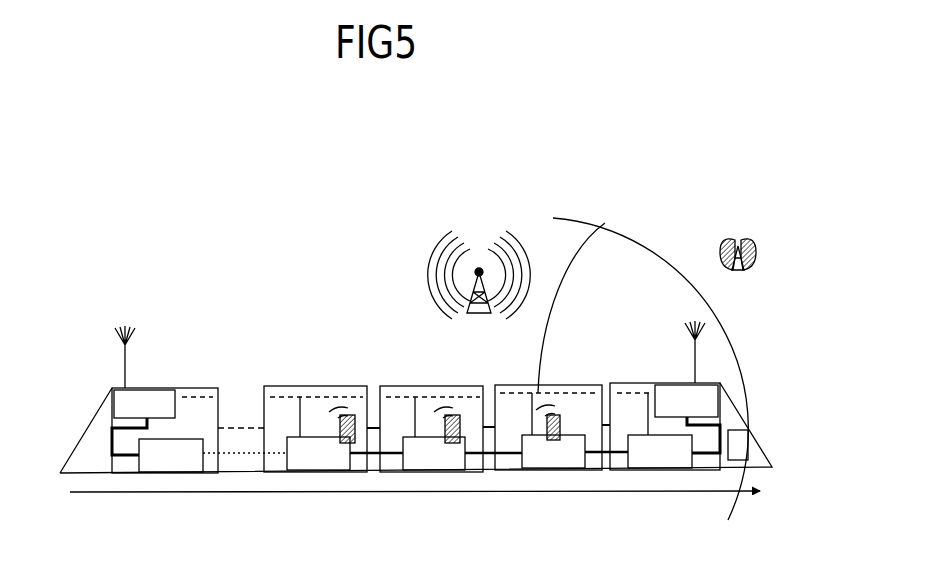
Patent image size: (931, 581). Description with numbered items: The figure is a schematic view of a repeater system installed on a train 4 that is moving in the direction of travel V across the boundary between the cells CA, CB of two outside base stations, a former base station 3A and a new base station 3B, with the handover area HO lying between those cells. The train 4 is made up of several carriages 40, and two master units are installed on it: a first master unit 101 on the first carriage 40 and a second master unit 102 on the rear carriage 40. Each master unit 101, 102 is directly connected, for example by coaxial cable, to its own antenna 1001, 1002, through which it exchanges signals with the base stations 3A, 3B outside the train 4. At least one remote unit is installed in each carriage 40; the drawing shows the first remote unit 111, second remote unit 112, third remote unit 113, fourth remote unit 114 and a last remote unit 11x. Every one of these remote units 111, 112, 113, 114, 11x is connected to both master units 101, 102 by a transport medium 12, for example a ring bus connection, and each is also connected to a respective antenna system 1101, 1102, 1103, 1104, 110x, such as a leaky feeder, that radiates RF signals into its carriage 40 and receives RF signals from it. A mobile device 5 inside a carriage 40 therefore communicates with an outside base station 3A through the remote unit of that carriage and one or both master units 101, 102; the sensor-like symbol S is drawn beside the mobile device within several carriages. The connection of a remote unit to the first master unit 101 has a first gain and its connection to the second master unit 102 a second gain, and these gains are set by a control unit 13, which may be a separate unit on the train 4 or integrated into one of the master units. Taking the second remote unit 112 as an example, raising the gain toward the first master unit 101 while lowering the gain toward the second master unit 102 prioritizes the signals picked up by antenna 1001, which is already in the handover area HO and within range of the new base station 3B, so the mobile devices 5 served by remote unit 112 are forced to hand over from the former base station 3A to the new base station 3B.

The train 4 is at (71, 479).
The mobile device 5 is at (352, 408).
The transport medium 12 is at (127, 464).
The control unit 13 is at (740, 445).
The carriage 40 is at (203, 388).
The antenna system 110x is at (184, 437).
The antenna system 1104 is at (325, 397).
The antenna system 1103 is at (400, 397).
The antenna system 1102 is at (517, 393).
The antenna system 1101 is at (633, 392).
The second master unit 102 is at (157, 388).
The first master unit 101 is at (712, 397).
The remote unit 11x is at (187, 472).
The fourth remote unit 114 is at (303, 470).
The third remote unit 113 is at (448, 472).
The second remote unit 112 is at (570, 468).
The first remote unit 111 is at (673, 468).
The antenna 1002 is at (120, 350).
The antenna 1001 is at (705, 340).
The sensor S is at (450, 442).
The direction of travel V is at (357, 493).
The cell CA is at (560, 218).
The cell CB is at (605, 220).
The handover area HO is at (636, 272).
The former base station 3A is at (478, 236).
The new base station 3B is at (743, 219).